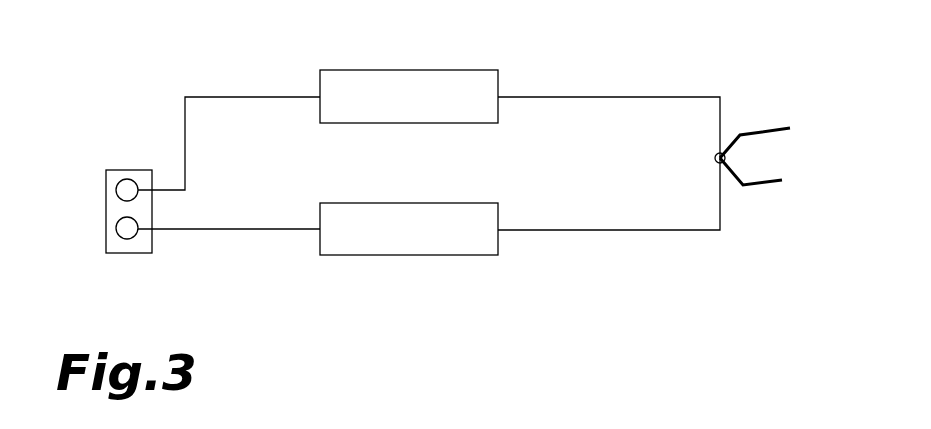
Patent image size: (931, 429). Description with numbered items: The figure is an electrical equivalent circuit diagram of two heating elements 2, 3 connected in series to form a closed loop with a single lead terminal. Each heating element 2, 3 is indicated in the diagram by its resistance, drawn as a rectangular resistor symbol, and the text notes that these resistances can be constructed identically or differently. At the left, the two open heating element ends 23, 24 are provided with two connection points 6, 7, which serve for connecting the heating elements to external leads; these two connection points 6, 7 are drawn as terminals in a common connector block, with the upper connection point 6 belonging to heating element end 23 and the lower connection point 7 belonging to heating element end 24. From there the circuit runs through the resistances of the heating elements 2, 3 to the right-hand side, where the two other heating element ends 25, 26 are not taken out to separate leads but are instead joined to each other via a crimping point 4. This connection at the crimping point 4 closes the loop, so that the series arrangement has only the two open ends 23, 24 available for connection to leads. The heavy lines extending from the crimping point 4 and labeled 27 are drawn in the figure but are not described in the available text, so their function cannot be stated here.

The heating element 2 is at (556, 97).
The heating element 3 is at (553, 230).
The crimping point 4 is at (726, 159).
The connection point 6 is at (127, 180).
The connection point 7 is at (126, 234).
The heating element end 23 is at (166, 190).
The heating element end 24 is at (177, 231).
The heating element end 25 is at (720, 118).
The heating element end 26 is at (723, 208).
The output terminals 27 is at (773, 152).